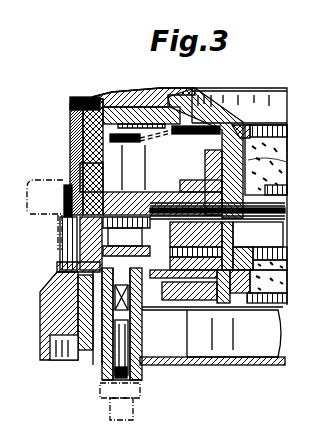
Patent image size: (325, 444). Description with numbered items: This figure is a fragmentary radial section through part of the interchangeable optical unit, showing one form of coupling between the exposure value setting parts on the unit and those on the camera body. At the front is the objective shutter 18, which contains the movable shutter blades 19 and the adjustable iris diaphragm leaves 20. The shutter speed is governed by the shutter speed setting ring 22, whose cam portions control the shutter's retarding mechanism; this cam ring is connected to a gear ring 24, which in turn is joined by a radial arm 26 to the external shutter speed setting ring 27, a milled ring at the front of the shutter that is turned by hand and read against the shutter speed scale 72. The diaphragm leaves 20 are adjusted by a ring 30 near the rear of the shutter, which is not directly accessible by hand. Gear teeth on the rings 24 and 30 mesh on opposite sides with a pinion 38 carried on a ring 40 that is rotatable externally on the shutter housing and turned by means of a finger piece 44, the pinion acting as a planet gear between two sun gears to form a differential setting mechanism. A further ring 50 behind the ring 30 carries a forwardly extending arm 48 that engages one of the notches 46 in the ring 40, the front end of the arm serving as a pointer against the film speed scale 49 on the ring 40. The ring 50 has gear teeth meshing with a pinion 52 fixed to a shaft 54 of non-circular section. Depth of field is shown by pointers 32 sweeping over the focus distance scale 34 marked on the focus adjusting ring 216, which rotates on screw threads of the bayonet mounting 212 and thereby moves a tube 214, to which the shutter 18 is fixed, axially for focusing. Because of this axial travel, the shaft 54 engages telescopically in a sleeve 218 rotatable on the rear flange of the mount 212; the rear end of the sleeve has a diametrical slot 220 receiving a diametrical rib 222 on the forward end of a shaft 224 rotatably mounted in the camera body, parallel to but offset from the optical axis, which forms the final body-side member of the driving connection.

The objective shutter 18 is at (82, 151).
The shutter blades 19 is at (284, 209).
The iris diaphragm leaves 20 is at (284, 216).
The shutter speed setting ring 22 is at (197, 170).
The gear ring 24 is at (127, 162).
The radial arm 26 is at (85, 118).
The external shutter speed setting ring 27 is at (95, 100).
The diaphragm aperture adjusting ring 30 is at (238, 228).
The depth of field pointers 32 is at (63, 263).
The focus distance scale 34 is at (58, 275).
The pinion 38 is at (64, 233).
The ring 40 is at (66, 193).
The finger piece 44 is at (37, 236).
The notches 46 is at (112, 180).
The arm 48 is at (62, 203).
The film speed scale 49 is at (68, 195).
The ring 50 is at (152, 193).
The pinion 52 is at (126, 236).
The shaft 54 is at (130, 312).
The shutter speed scale 72 is at (82, 134).
The bayonet mounting 212 is at (79, 362).
The tube 214 is at (140, 332).
The focus adjusting ring 216 is at (63, 304).
The sleeve 218 is at (137, 336).
The diametrical slot 220 is at (141, 366).
The diametrical rib 222 is at (112, 392).
The shaft 224 is at (132, 409).